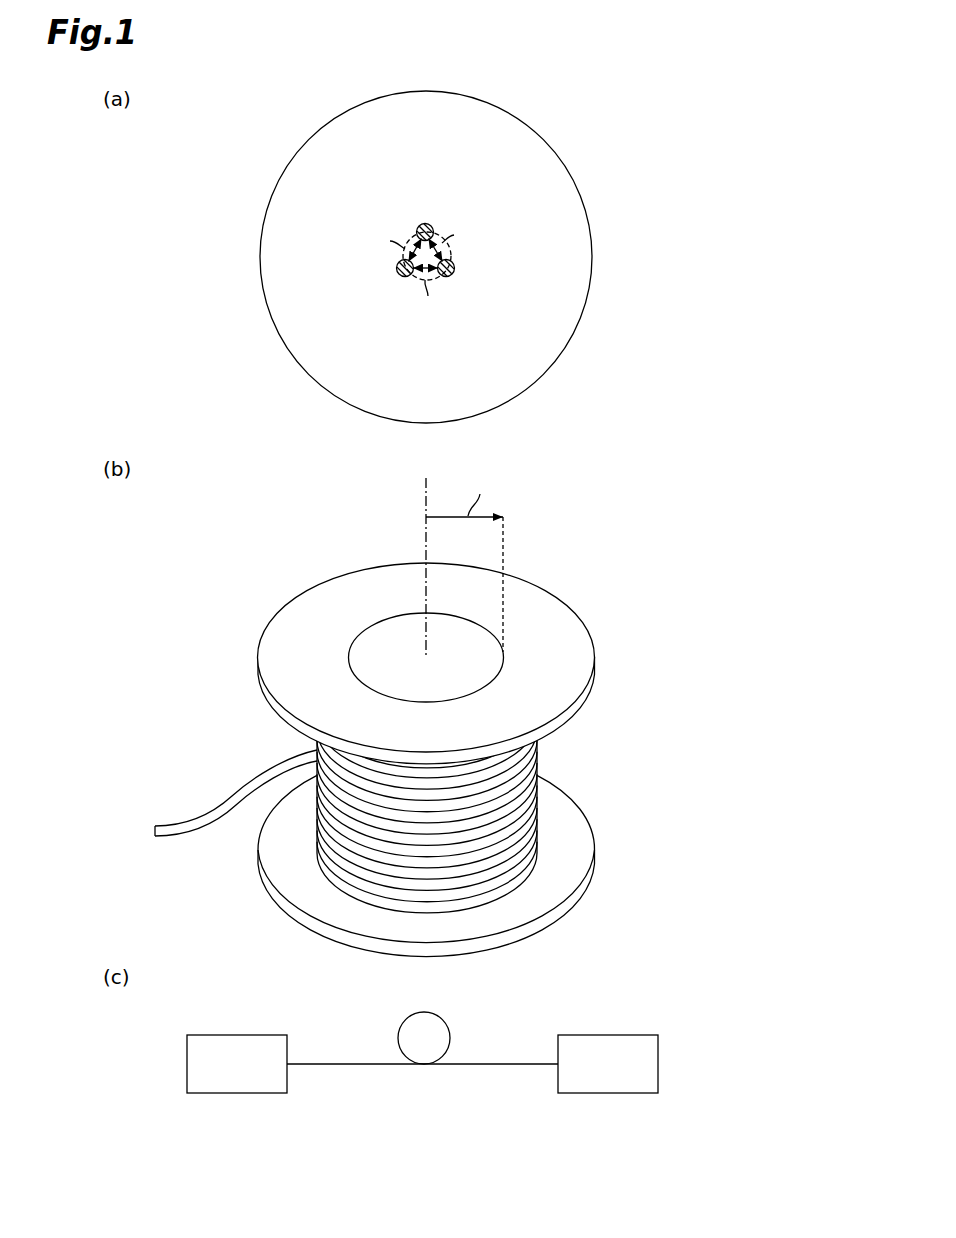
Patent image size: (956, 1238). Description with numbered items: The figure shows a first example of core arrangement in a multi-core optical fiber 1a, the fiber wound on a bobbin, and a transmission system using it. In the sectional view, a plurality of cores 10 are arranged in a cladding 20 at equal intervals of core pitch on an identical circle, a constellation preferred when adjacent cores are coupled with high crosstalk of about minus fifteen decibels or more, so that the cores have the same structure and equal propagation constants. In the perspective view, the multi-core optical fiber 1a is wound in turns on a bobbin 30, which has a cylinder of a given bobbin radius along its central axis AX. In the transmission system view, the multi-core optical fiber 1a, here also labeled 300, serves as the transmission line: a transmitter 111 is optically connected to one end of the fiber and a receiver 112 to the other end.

The multi-core optical fiber 1a is at (538, 98).
The cores 10 is at (421, 223).
The cladding 20 is at (538, 355).
The bobbin 30 is at (600, 602).
The transmitter 111 is at (242, 1035).
The receiver 112 is at (612, 1035).
The optical fiber (transmission line) 300 is at (452, 1012).